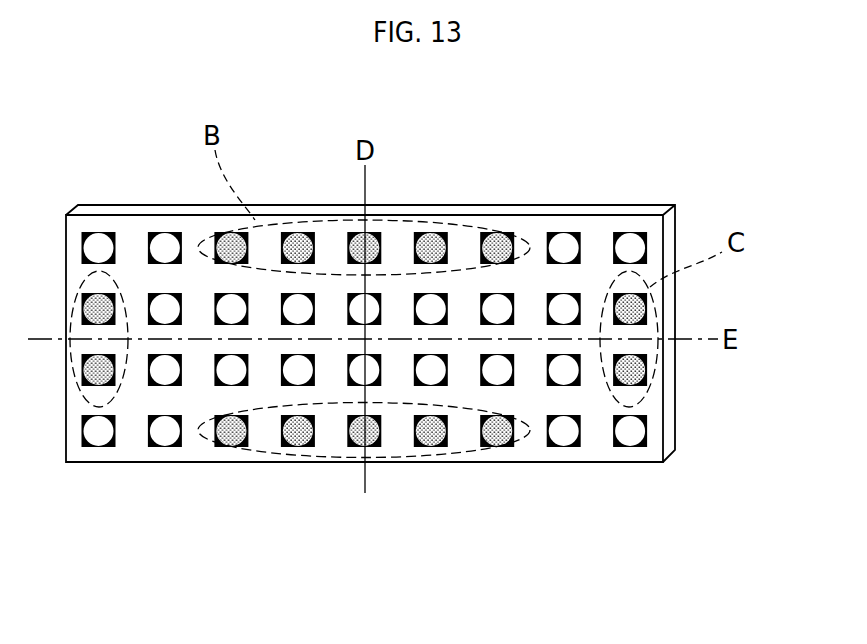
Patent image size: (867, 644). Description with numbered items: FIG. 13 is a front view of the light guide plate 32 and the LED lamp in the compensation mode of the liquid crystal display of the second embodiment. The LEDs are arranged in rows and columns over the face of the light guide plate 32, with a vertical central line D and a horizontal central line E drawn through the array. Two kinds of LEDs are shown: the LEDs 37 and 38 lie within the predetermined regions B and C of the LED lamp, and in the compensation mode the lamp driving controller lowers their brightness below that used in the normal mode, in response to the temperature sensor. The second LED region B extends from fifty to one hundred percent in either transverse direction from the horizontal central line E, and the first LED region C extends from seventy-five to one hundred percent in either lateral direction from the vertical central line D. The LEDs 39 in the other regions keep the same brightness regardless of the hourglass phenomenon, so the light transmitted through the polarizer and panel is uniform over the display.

The light guide plate 32 is at (598, 452).
The LED 37 is at (300, 233).
The LED 38 is at (638, 370).
The LED 39 is at (165, 233).